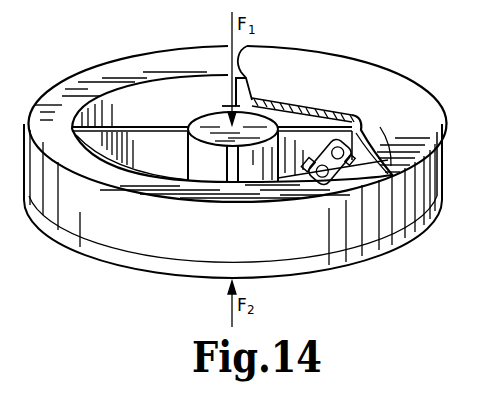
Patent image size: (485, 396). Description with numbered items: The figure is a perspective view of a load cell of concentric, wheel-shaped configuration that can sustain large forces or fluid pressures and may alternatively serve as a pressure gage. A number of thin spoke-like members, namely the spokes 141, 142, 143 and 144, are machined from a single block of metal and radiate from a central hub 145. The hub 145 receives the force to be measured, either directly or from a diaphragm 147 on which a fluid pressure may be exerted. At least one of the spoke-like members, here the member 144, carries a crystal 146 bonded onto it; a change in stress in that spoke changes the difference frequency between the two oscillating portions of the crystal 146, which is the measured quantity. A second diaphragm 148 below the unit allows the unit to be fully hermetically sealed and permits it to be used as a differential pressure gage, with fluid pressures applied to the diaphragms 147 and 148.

The spoke 141 is at (147, 118).
The spoke 142 is at (230, 90).
The spoke 143 is at (228, 170).
The spoke 144 is at (330, 128).
The hub 145 is at (258, 120).
The crystal 146 is at (361, 138).
The diaphragm 147 is at (357, 62).
The second diaphragm 148 is at (345, 265).